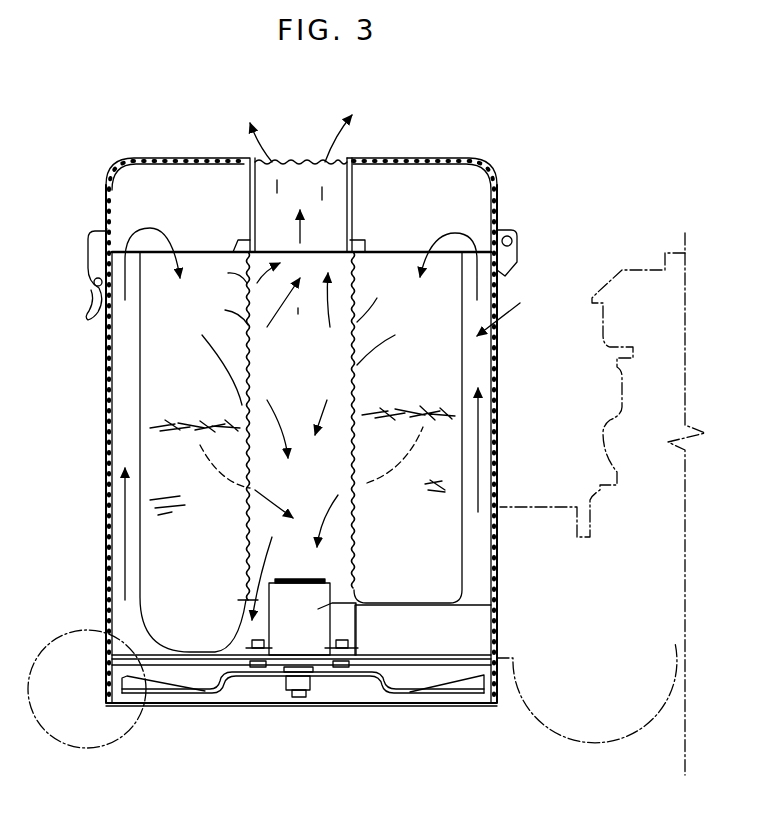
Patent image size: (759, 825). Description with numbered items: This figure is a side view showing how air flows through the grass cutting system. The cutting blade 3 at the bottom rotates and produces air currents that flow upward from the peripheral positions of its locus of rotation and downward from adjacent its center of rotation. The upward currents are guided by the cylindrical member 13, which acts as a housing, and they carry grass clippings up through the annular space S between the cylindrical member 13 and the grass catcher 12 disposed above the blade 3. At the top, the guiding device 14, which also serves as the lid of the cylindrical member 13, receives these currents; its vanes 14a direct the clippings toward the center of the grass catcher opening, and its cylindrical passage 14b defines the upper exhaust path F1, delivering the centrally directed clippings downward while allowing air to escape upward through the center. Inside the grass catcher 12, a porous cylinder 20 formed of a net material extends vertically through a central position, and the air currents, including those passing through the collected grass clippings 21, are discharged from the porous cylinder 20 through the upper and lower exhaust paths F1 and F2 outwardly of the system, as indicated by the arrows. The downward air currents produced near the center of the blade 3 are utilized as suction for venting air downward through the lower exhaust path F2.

The cutting blade 3 is at (197, 695).
The grass catcher 12 is at (140, 413).
The cylindrical member 13 is at (107, 528).
The guiding device 14 is at (331, 175).
The vanes 14a is at (487, 179).
The cylindrical passage 14b is at (352, 213).
The porous cylinder 20 is at (250, 350).
The dust particles 21 is at (168, 420).
The annular space S is at (508, 313).
The upper exhaust path F1 is at (297, 233).
The lower exhaust path F2 is at (248, 600).